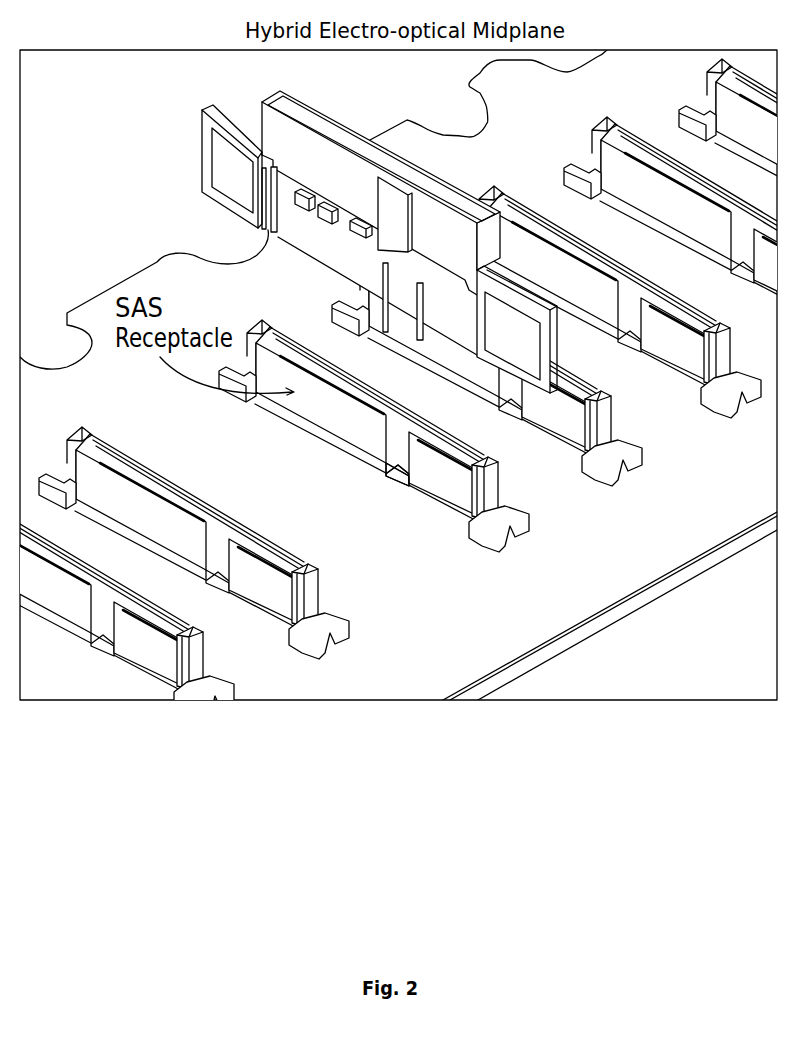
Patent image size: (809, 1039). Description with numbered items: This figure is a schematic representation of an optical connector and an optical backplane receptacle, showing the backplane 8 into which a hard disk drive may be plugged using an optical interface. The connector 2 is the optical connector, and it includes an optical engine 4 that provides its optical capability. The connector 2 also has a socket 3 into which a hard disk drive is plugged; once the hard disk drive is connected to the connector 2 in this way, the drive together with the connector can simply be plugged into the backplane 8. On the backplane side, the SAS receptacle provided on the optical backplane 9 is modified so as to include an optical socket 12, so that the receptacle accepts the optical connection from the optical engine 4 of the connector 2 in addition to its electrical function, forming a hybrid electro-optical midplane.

The connector 2 is at (207, 126).
The socket 3 is at (288, 104).
The optical engine 4 is at (403, 328).
The backplane 8 is at (99, 310).
The optical backplane 9 is at (420, 140).
The optical socket 12 is at (403, 490).